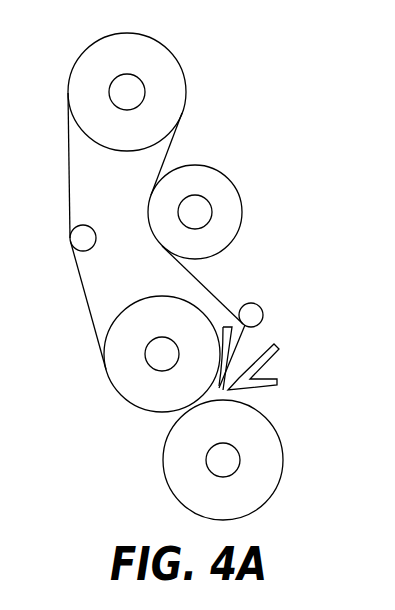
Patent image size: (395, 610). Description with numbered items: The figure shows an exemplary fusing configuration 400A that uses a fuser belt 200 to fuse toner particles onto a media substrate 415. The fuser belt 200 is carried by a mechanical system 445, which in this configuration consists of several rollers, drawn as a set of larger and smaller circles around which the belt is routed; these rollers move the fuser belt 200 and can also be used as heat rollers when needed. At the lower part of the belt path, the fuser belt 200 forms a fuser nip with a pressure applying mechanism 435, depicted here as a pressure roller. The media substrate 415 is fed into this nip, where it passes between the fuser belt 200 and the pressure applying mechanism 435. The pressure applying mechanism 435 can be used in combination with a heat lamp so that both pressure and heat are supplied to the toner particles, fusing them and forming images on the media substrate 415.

The fusing configuration 400A is at (243, 45).
The mechanical system 445 is at (197, 128).
The fuser belt 200 is at (88, 308).
The media substrate 415 is at (172, 417).
The pressure applying mechanism 435 is at (285, 458).